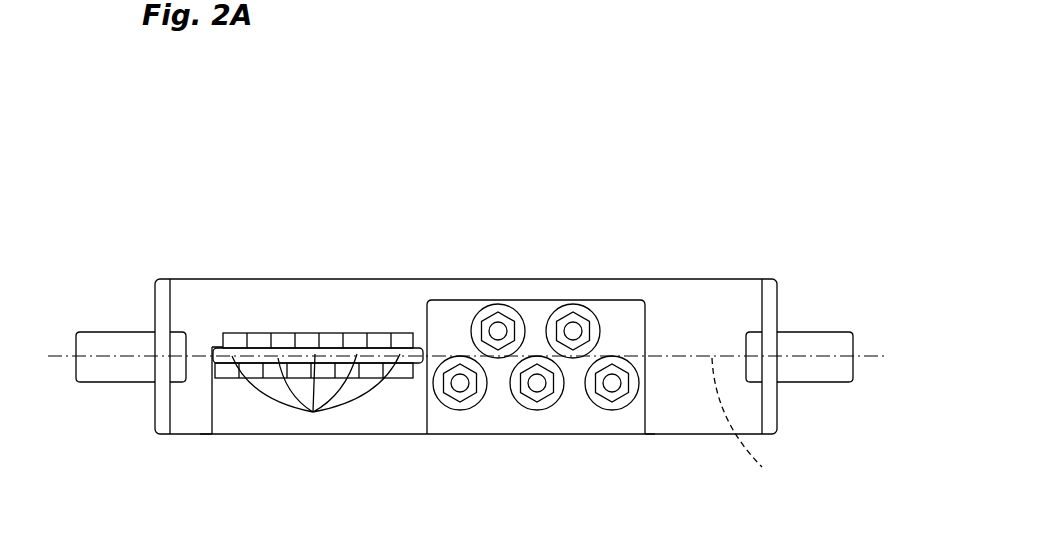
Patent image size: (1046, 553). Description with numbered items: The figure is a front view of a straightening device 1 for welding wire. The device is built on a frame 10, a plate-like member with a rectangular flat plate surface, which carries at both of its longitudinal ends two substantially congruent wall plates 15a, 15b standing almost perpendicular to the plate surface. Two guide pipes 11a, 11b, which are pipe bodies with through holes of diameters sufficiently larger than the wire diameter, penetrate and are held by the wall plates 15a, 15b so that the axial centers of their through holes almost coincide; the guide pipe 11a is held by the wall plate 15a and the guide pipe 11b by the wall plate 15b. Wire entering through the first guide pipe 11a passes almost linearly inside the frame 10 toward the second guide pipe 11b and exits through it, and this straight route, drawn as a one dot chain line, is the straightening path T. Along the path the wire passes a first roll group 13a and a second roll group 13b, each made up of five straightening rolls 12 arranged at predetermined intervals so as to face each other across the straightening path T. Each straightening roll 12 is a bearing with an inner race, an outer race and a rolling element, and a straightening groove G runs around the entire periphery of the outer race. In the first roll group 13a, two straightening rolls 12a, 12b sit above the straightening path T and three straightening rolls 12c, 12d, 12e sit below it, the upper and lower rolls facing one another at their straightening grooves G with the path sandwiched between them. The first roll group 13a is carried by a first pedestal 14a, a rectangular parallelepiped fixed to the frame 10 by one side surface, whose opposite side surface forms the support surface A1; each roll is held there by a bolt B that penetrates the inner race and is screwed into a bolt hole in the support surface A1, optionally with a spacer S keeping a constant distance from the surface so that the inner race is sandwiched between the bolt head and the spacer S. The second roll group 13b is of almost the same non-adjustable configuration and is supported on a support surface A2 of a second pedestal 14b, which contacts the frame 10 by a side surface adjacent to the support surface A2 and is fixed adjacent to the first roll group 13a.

The straightening device 1 is at (465, 203).
The frame 10 is at (698, 280).
The guide pipe 11a is at (813, 332).
The guide pipe 11b is at (90, 332).
The straightening roll 12 is at (553, 375).
The straightening roll 12a is at (472, 315).
The straightening roll 12b is at (602, 304).
The straightening roll 12c is at (450, 407).
The straightening roll 12d is at (547, 407).
The straightening roll 12e is at (592, 407).
The first roll group 13a is at (544, 296).
The second roll group 13b is at (312, 310).
The first pedestal 14a is at (650, 417).
The second pedestal 14b is at (210, 417).
The wall plate 15a is at (760, 297).
The wall plate 15b is at (173, 297).
The support surface A1 is at (443, 318).
The support surface A2 is at (212, 355).
The bolt B is at (520, 327).
The spacer S is at (213, 355).
The straightening groove G is at (313, 412).
The straightening path T is at (748, 422).